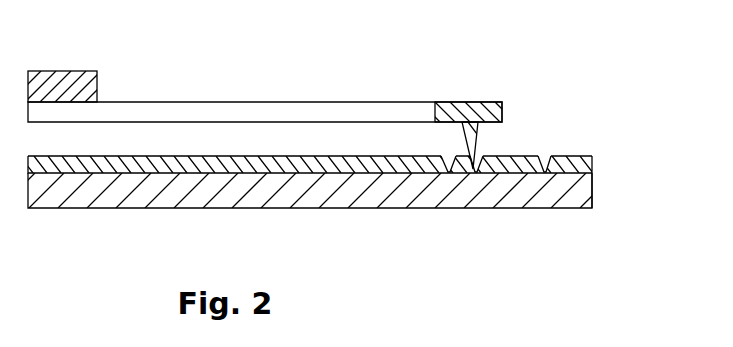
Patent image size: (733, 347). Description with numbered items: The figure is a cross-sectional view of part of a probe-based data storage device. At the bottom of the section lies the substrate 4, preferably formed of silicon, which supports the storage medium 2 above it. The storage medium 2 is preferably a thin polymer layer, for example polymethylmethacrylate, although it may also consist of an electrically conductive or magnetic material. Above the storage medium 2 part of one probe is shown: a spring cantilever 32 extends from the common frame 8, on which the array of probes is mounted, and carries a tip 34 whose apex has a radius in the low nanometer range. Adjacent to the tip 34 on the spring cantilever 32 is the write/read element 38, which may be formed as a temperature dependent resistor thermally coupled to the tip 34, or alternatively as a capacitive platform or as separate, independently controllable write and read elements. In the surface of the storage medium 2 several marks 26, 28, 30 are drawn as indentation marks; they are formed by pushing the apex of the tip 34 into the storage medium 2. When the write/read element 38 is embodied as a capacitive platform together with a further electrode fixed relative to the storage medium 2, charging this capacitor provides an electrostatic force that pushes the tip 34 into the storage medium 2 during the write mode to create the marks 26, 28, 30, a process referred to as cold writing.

The storage medium 2 is at (592, 174).
The substrate 4 is at (51, 209).
The common frame 8 is at (52, 70).
The mark 26 is at (439, 166).
The mark 28 is at (502, 166).
The mark 30 is at (544, 157).
The spring cantilever 32 is at (245, 101).
The tip 34 is at (478, 131).
The write/read element 38 is at (463, 102).